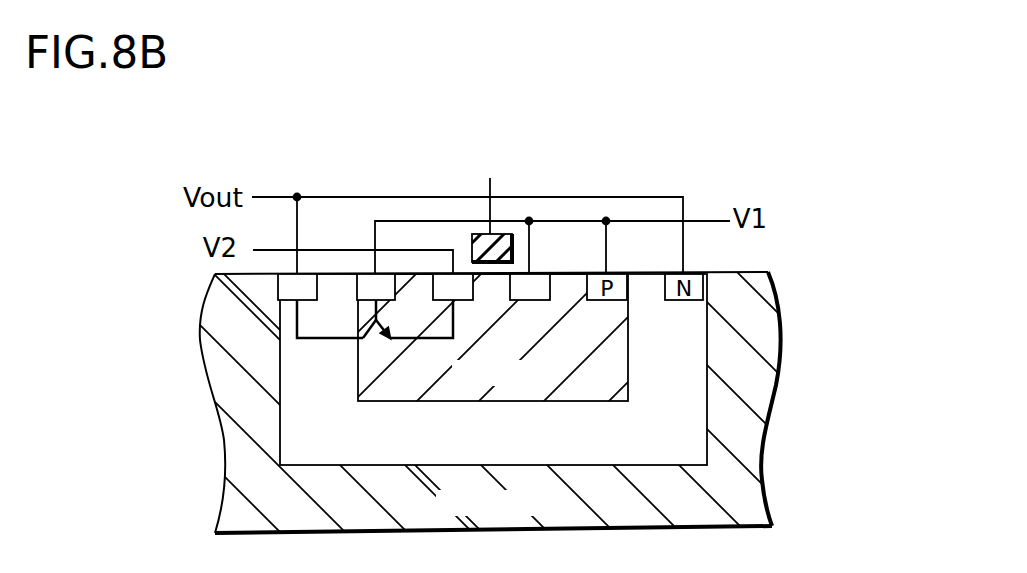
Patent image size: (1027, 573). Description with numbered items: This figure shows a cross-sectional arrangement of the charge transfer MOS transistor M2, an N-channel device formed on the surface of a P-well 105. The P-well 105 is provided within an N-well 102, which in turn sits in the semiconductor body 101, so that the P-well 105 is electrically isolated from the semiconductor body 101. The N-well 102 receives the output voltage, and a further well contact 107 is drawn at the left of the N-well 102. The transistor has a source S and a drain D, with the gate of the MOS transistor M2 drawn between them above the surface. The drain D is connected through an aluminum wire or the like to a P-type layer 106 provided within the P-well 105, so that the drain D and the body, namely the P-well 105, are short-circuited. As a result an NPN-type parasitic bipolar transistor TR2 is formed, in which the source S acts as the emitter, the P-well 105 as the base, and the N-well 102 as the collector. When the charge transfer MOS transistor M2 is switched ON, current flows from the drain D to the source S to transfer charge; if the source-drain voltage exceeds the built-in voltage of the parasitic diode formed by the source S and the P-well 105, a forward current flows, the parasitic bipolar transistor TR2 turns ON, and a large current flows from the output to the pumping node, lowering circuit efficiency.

The semiconductor body 101 is at (723, 493).
The N-well 102 is at (665, 420).
The P-well 105 is at (600, 358).
The P-type layer 106 is at (367, 274).
The N-type diffusion (N-well contact) region 107 is at (290, 274).
The charge transfer MOS transistor M2 is at (490, 163).
The parasitic bipolar transistor TR2 is at (377, 335).
The source S is at (447, 274).
The drain D is at (540, 272).